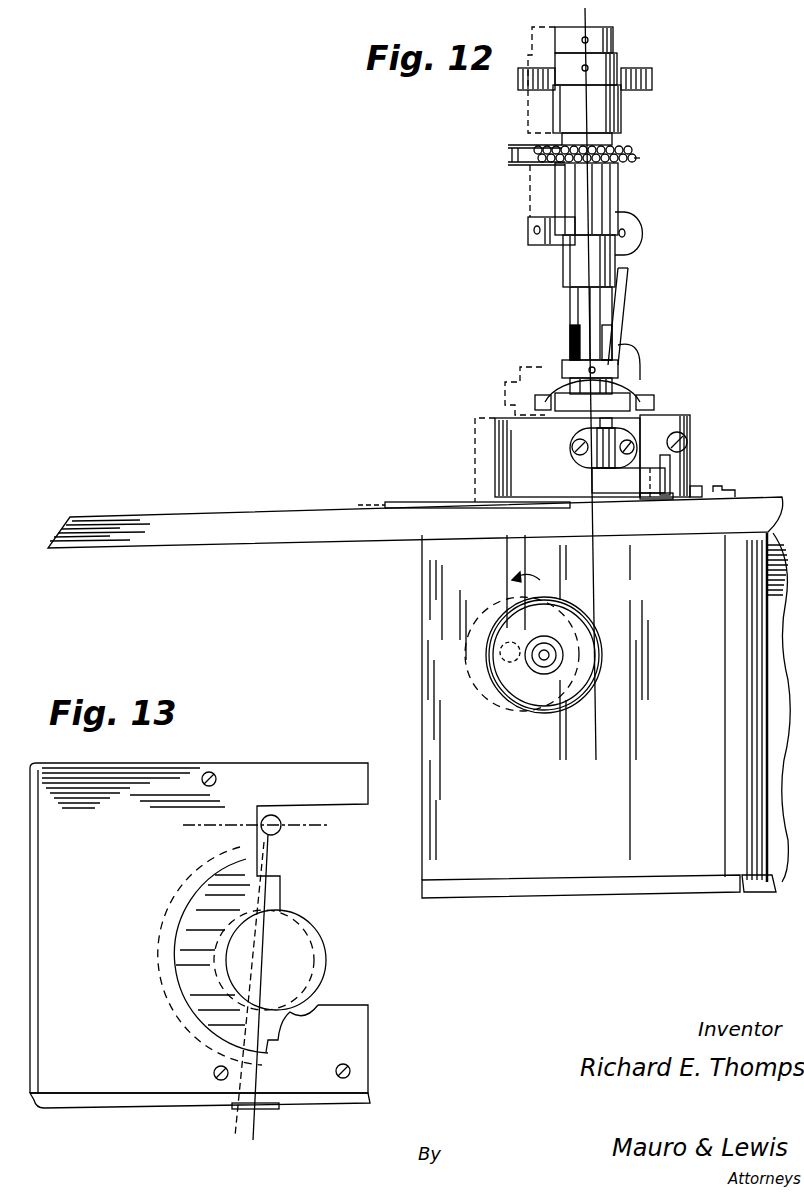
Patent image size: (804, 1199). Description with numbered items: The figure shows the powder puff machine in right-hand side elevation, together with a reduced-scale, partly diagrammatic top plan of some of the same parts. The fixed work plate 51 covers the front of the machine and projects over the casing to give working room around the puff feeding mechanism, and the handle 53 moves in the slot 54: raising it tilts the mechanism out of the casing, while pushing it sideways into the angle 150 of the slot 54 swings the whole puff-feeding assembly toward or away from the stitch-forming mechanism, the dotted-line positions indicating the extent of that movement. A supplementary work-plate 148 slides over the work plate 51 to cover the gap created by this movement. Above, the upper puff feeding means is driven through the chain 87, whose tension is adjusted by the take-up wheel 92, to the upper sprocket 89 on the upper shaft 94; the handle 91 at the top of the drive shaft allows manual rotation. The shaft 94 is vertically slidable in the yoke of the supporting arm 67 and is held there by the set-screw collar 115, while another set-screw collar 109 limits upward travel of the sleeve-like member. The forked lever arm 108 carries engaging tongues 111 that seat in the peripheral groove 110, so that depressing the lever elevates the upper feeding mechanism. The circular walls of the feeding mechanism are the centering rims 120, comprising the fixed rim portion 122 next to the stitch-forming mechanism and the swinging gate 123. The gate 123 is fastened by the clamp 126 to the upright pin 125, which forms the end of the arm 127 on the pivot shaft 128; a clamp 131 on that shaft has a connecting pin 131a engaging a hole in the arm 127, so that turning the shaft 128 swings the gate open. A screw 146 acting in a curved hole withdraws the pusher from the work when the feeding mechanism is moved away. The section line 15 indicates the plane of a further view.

In FIG. 12, the section line 15 is at (583, 22).
In FIG. 12, the work plate 51 is at (172, 518).
In FIG. 13, the work plate 51 is at (138, 784).
In FIG. 12, the handle 53 is at (585, 660).
In FIG. 13, the handle 53 is at (276, 1110).
In FIG. 12, the slot 54 is at (538, 572).
In FIG. 12, the supporting arm 67 is at (622, 110).
In FIG. 12, the chain 87 is at (634, 148).
In FIG. 12, the upper sprocket 89 is at (636, 156).
In FIG. 12, the handle 91 is at (652, 79).
In FIG. 12, the take-up wheel 92 is at (508, 165).
In FIG. 12, the upper shaft 94 is at (600, 206).
In FIG. 12, the lever arm 108 is at (630, 292).
In FIG. 12, the set-screw collar 109 is at (620, 375).
In FIG. 12, the peripheral groove 110 is at (578, 394).
In FIG. 12, the engaging tongues 111 is at (560, 405).
In FIG. 12, the set-screw collar 115 is at (614, 46).
In FIG. 12, the centering rims 120 is at (494, 455).
In FIG. 13, the centering rims 120 is at (327, 959).
In FIG. 12, the fixed rim portion 122 is at (690, 468).
In FIG. 12, the gate 123 is at (492, 432).
In FIG. 12, the upright pin 125 is at (612, 424).
In FIG. 12, the clamp 126 is at (578, 460).
In FIG. 12, the arm 127 is at (618, 494).
In FIG. 12, the pivot shaft 128 is at (660, 428).
In FIG. 12, the clamp 131 is at (688, 438).
In FIG. 12, the connecting pin 131a is at (651, 498).
In FIG. 12, the screw 146 is at (696, 486).
In FIG. 12, the supplementary work-plate 148 is at (397, 503).
In FIG. 13, the supplementary work-plate 148 is at (189, 973).
In FIG. 12, the angle 150 is at (541, 666).